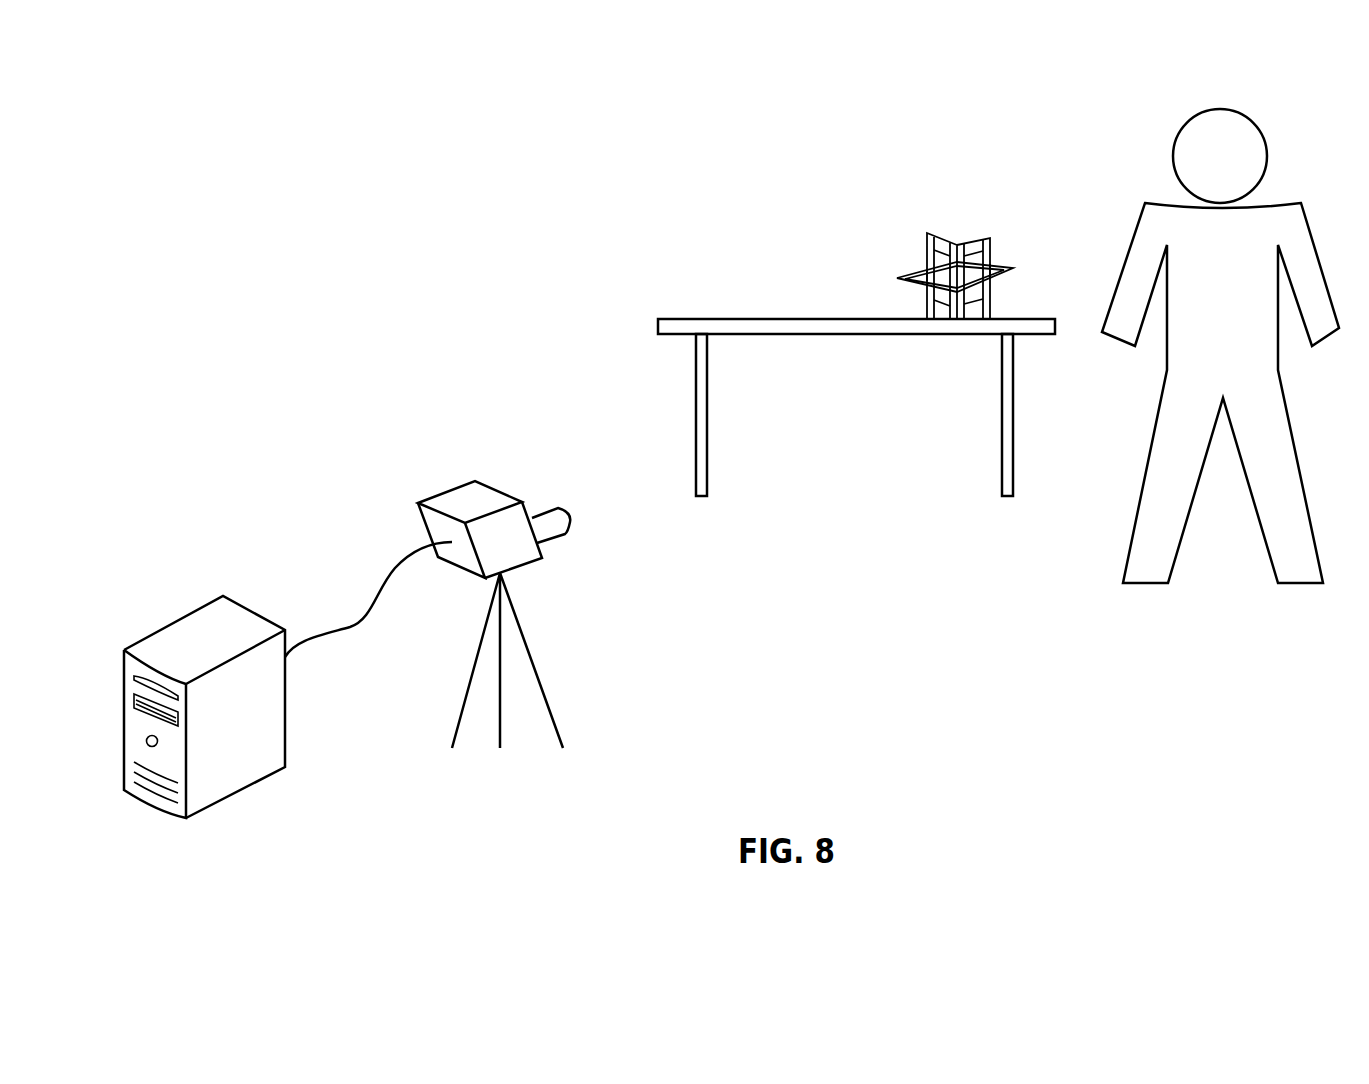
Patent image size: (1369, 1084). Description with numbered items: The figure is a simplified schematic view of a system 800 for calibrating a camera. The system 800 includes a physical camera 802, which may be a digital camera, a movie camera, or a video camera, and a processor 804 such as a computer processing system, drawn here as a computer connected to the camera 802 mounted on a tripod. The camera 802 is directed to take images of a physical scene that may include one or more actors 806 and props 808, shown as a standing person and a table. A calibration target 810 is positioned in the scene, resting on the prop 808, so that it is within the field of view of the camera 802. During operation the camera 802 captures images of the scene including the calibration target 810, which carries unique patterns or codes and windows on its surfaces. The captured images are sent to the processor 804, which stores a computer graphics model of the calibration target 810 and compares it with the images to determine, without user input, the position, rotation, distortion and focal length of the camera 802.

The system 800 is at (417, 160).
The physical camera 802 is at (462, 507).
The processor 804 is at (162, 637).
The actor 806 is at (1173, 130).
The prop 808 is at (688, 319).
The calibration target 810 is at (922, 232).